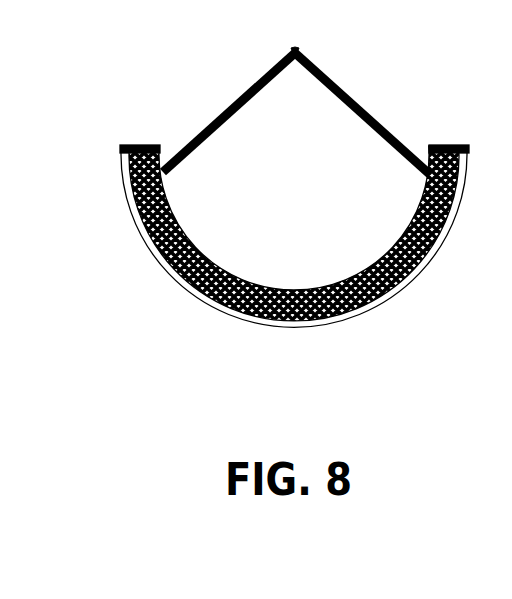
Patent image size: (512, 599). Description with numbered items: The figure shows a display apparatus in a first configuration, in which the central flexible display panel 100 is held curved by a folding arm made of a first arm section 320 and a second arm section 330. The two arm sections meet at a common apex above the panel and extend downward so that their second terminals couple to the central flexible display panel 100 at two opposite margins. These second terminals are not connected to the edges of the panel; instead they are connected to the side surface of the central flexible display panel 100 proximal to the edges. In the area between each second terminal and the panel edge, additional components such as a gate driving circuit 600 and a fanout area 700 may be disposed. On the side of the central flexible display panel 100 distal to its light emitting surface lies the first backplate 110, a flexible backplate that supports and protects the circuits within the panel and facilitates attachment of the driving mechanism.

The central flexible display panel 100 is at (268, 247).
The first backplate 110 is at (285, 316).
The first arm section 320 is at (223, 105).
The second arm section 330 is at (378, 114).
The gate driving circuit 600 is at (168, 148).
The fanout area 700 is at (142, 145).